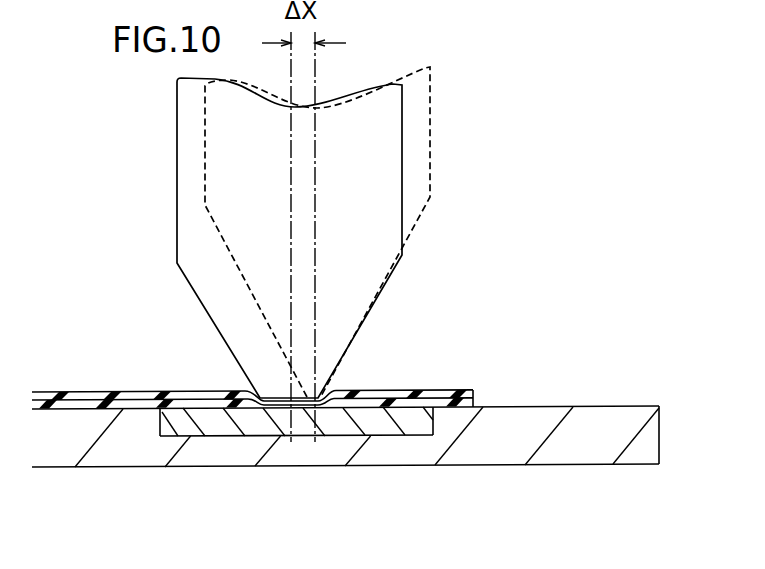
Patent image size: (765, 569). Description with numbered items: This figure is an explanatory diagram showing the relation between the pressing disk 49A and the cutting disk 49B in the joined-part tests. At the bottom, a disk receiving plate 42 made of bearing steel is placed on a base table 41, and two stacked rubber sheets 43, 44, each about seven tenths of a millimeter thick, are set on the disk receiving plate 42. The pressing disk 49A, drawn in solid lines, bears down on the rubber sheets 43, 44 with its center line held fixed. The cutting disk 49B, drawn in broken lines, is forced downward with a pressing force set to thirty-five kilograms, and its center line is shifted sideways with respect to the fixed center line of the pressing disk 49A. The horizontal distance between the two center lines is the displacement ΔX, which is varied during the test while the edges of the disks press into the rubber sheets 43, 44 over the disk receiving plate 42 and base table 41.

The base table 41 is at (495, 458).
The disk receiving plate 42 is at (223, 430).
The rubber sheet 43 is at (82, 392).
The rubber sheet 44 is at (67, 407).
The pressing disk 49A is at (177, 211).
The cutting disk 49B is at (432, 187).